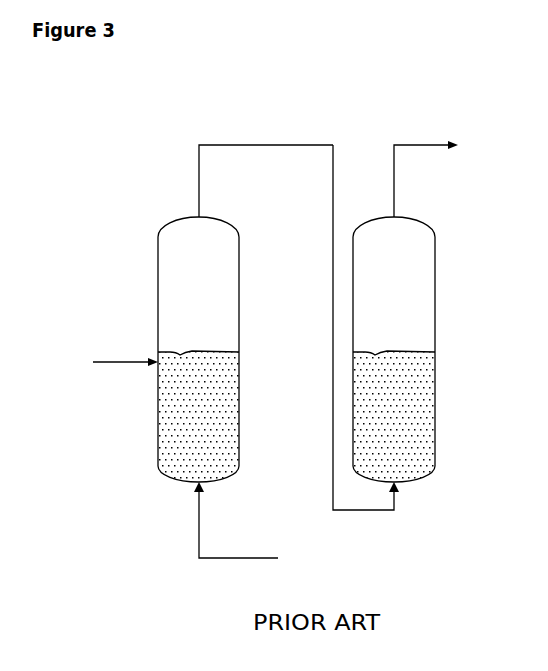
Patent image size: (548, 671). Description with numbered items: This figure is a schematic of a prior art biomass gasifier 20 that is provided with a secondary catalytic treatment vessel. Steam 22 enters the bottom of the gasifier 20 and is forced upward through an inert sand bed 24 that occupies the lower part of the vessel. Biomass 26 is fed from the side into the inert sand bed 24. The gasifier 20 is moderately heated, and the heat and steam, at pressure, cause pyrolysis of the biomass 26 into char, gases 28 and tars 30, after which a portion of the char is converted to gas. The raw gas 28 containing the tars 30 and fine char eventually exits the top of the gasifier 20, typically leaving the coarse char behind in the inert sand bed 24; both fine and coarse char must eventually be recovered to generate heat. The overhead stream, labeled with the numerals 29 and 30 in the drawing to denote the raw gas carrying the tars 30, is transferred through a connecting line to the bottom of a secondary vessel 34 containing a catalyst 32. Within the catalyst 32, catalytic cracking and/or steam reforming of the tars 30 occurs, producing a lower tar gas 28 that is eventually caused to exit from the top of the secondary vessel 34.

The biomass gasifier 20 is at (244, 273).
The steam 22 is at (256, 526).
The inert sand bed 24 is at (185, 418).
The biomass 26 is at (103, 363).
The raw gas 28 is at (452, 175).
The overhead line 29 is at (266, 168).
The tars 30 is at (348, 327).
The catalyst 32 is at (405, 417).
The secondary vessel 34 is at (439, 273).